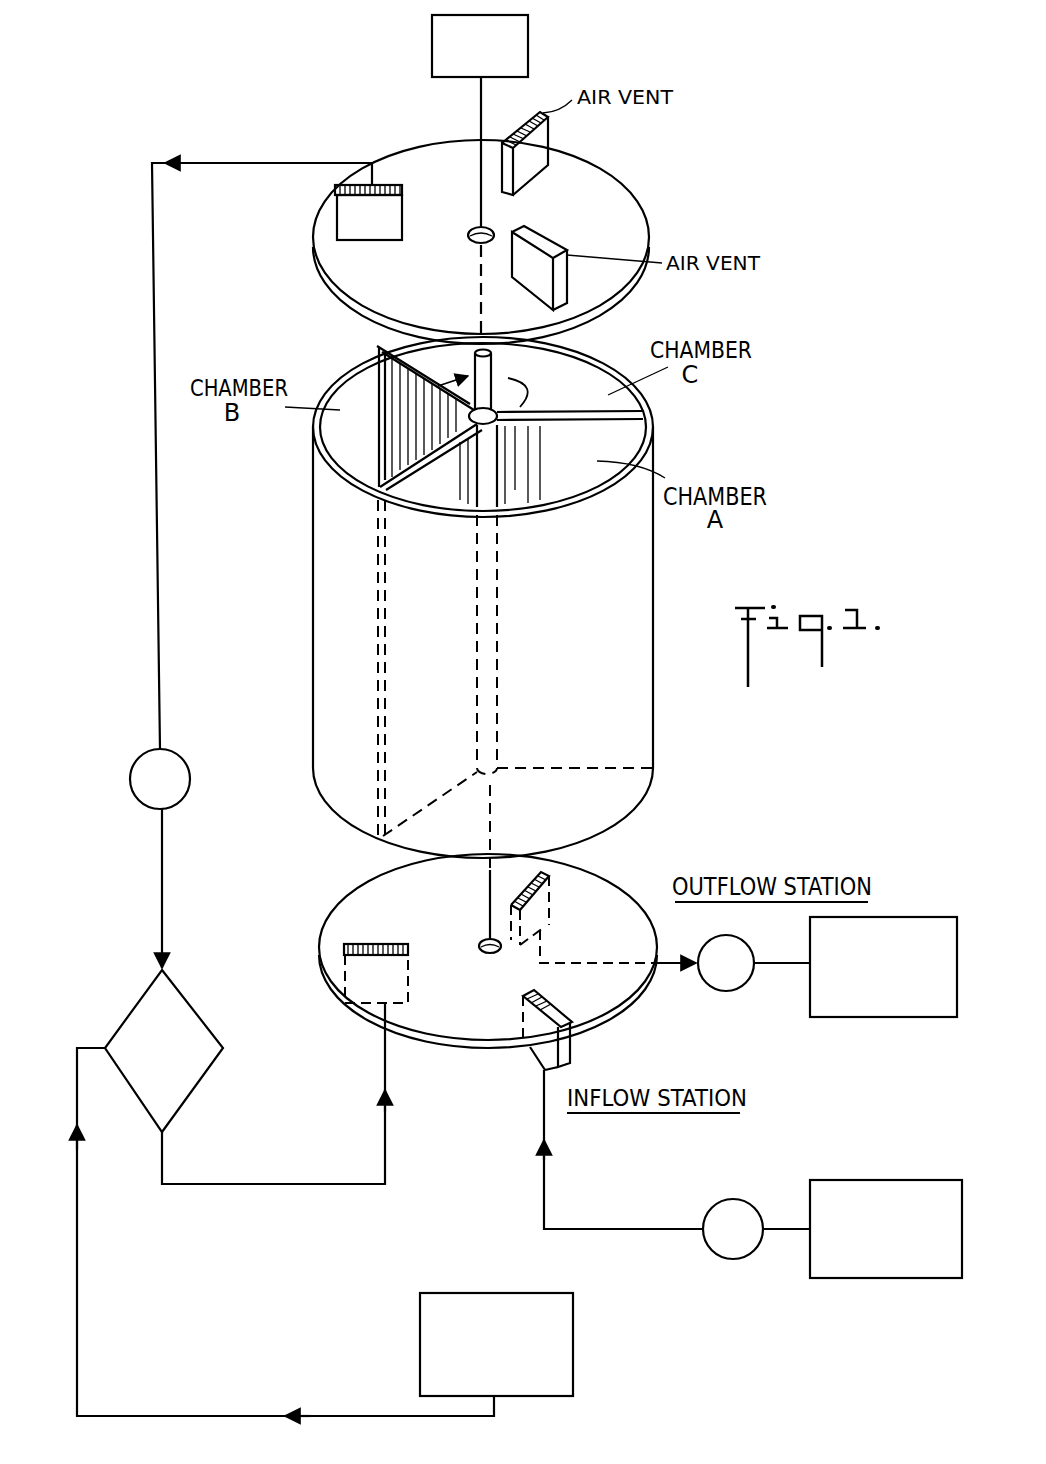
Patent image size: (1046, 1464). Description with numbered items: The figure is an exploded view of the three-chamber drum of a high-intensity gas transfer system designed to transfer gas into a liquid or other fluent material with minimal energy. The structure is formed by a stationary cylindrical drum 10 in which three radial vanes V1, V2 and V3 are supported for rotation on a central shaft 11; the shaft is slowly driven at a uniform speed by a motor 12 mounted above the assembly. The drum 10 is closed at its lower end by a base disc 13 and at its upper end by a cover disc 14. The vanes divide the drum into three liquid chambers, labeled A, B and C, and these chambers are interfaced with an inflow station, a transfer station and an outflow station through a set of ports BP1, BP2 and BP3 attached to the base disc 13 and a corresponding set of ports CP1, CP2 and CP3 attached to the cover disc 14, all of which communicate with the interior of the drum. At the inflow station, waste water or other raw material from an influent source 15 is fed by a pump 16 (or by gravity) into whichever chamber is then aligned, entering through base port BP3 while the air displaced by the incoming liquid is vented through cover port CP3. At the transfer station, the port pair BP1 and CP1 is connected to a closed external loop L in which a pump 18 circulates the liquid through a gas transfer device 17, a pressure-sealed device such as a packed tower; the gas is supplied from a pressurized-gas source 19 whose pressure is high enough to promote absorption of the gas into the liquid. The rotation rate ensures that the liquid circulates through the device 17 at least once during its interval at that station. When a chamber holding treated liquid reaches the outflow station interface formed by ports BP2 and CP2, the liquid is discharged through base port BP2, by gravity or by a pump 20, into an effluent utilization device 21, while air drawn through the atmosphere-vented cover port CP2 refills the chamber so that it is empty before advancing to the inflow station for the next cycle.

The cylindrical drum 10 is at (653, 590).
The central shaft 11 is at (491, 357).
The motor 12 is at (528, 30).
The base disc 13 is at (625, 882).
The cover disc 14 is at (633, 187).
The influent source 15 is at (878, 1180).
The pump 16 is at (738, 1198).
The gas transfer device 17 is at (193, 1002).
The pump 18 is at (190, 795).
The pressurized-gas source 19 is at (573, 1305).
The pump 20 is at (748, 938).
The effluent utilization device 21 is at (921, 912).
The closed external loop L is at (153, 635).
The cover port CP1 is at (404, 193).
The cover port CP2 is at (548, 132).
The cover port CP3 is at (543, 230).
The base port BP1 is at (425, 928).
The base port BP2 is at (545, 887).
The base port BP3 is at (522, 1000).
The radial vane V1 is at (580, 412).
The radial vane V2 is at (426, 458).
The radial vane V3 is at (419, 374).